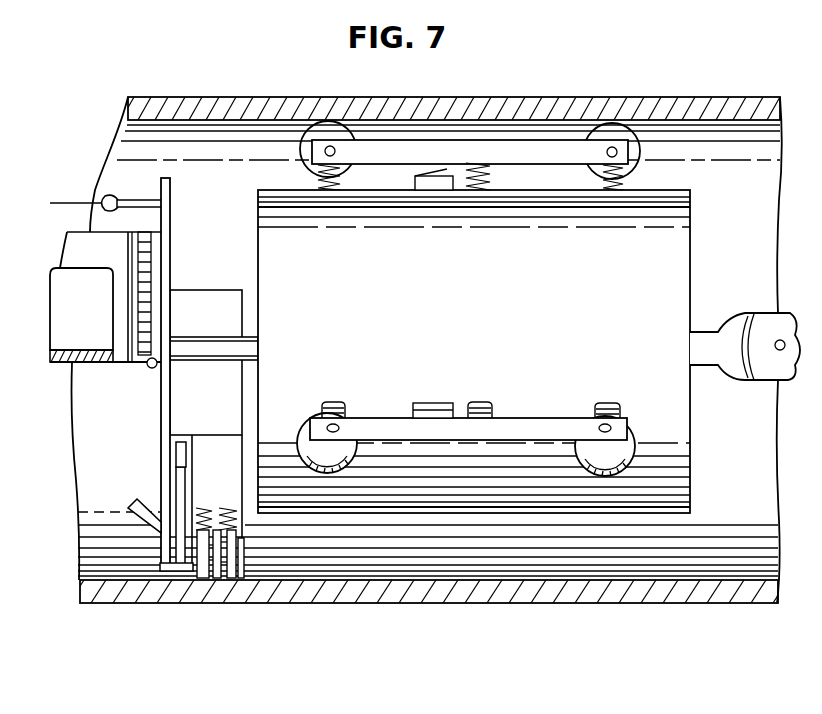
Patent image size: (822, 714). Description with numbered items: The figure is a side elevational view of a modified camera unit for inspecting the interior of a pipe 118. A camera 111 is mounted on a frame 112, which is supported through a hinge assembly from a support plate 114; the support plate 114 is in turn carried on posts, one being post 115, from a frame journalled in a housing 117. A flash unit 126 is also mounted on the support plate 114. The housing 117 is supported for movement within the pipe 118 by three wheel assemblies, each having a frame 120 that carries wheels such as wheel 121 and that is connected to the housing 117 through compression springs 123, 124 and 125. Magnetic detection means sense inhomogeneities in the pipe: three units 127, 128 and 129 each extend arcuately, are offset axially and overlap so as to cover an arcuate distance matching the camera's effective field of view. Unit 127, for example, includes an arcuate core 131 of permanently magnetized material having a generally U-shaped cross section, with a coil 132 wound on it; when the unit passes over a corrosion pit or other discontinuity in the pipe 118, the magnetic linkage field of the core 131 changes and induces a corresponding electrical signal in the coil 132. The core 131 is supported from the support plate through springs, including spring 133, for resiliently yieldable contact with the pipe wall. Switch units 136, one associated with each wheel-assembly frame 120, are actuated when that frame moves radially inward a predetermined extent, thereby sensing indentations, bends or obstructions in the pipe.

The camera 111 is at (57, 263).
The frame 112 is at (70, 366).
The support plate 114 is at (136, 203).
The post 115 is at (245, 350).
The housing 117 is at (300, 207).
The pipe 118 is at (738, 108).
The frame 120 is at (612, 130).
The wheel 121 is at (338, 133).
The compression spring 123 is at (343, 183).
The compression spring 124 is at (488, 187).
The compression spring 125 is at (624, 190).
The flash unit 126 is at (190, 303).
The magnetic detection unit 127 is at (184, 574).
The magnetic detection unit 128 is at (220, 582).
The magnetic detection unit 129 is at (239, 588).
The arcuate core 131 is at (180, 461).
The coil 132 is at (178, 480).
The spring 133 is at (756, 397).
The switch unit 136 is at (440, 190).